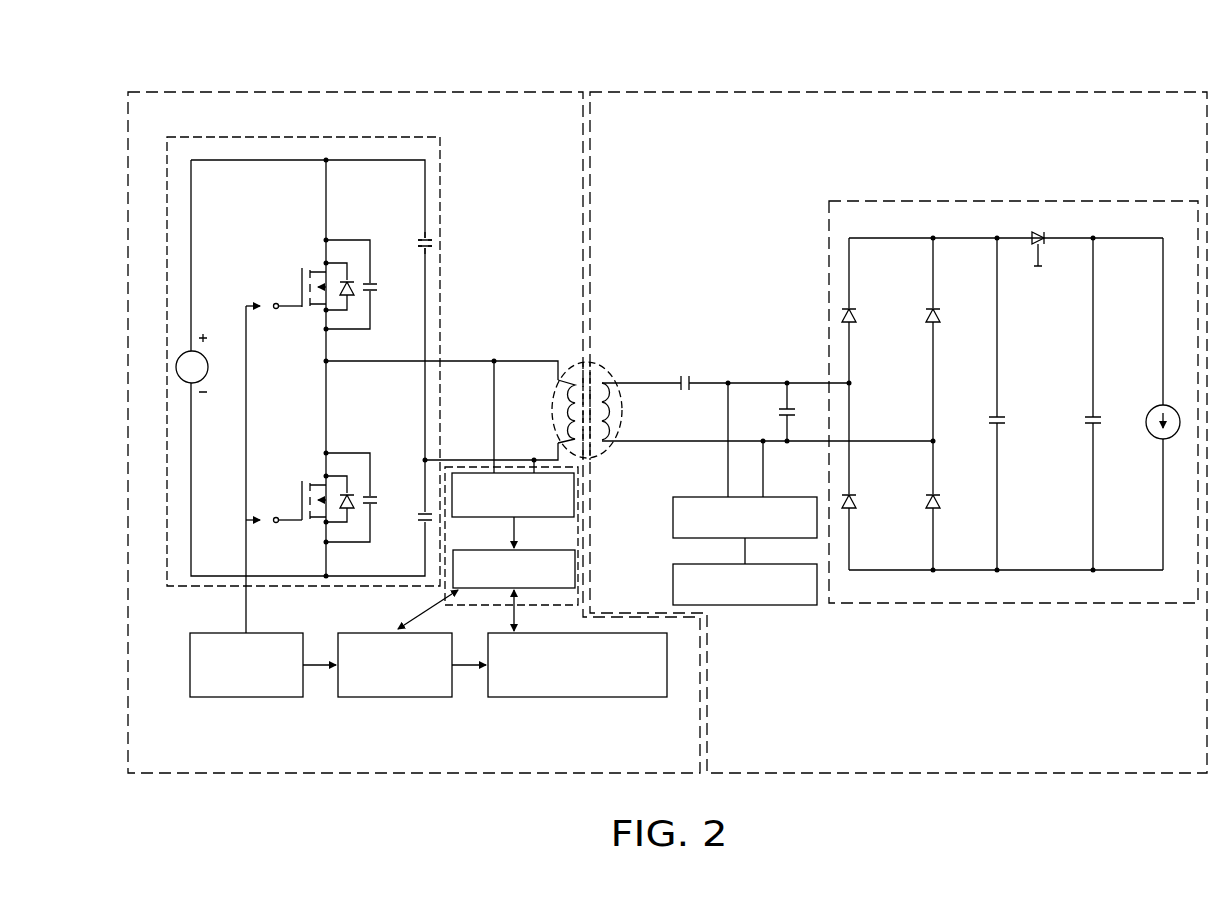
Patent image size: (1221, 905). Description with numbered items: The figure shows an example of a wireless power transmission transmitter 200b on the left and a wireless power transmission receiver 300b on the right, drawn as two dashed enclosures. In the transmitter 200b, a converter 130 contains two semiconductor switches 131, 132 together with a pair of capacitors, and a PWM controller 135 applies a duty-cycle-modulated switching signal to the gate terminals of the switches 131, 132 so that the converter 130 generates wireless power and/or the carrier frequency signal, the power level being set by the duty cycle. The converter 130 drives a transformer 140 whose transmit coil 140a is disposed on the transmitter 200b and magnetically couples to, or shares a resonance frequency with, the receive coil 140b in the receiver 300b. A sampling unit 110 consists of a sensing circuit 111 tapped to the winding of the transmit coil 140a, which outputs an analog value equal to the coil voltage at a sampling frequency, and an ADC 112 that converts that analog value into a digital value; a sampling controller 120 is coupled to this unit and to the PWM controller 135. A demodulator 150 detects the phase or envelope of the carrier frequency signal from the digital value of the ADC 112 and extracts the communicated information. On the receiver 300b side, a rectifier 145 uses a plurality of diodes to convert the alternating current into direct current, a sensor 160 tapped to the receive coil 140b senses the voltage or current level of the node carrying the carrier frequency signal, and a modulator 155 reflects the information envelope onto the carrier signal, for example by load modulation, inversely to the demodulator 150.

The wireless power transmission transmitter 200b is at (385, 92).
The wireless power transmission receiver 300b is at (780, 92).
The converter 130 is at (440, 166).
The semiconductor switch 131 is at (312, 264).
The semiconductor switch 132 is at (312, 478).
The sampling unit 110 is at (448, 601).
The sensing circuit 111 is at (583, 500).
The analog-to-digital converter (ADC) 112 is at (576, 569).
The sampling controller 120 is at (440, 698).
The pulse width modulation (PWM) controller 135 is at (290, 698).
The demodulator 150 is at (645, 690).
The transformer 140 is at (612, 385).
The transmit coil 140a is at (568, 366).
The receive coil 140b is at (612, 376).
The rectifier 145 is at (948, 200).
The sensor 160 is at (682, 497).
The modulator 155 is at (745, 606).